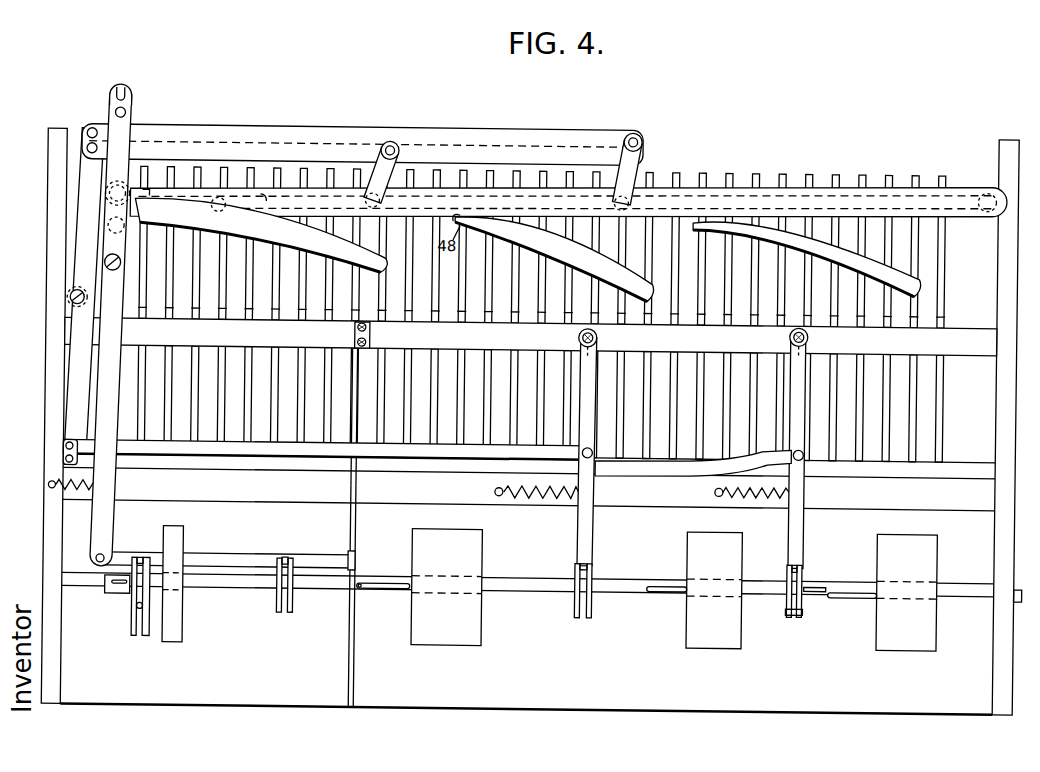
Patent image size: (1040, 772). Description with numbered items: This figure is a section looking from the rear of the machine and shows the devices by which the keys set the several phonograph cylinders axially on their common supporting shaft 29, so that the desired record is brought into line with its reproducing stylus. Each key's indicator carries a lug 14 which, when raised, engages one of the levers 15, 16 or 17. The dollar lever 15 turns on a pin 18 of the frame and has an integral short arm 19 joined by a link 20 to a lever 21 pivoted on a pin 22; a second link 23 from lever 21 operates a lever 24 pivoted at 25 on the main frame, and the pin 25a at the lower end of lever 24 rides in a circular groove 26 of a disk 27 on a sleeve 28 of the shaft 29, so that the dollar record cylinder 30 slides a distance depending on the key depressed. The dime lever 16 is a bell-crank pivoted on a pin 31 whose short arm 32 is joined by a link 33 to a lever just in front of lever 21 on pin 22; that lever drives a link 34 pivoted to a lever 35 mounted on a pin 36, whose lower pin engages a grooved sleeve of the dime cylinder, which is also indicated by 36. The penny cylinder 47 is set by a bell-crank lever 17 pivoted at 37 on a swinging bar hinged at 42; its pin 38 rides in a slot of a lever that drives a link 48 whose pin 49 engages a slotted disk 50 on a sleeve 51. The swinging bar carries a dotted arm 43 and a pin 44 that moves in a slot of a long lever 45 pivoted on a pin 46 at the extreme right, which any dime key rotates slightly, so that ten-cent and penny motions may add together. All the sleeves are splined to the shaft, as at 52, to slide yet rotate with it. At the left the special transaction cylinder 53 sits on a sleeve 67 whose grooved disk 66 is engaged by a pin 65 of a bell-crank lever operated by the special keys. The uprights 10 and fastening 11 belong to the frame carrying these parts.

The upright bar 10 is at (98, 378).
The screw 11 is at (103, 267).
The lug 14 is at (749, 320).
The lever 15 is at (806, 259).
The lever 16 is at (554, 259).
The bell-crank lever 17 is at (300, 238).
The pin 18 is at (604, 189).
The short arm 19 is at (640, 154).
The link 20 is at (349, 129).
The lever 21 is at (79, 133).
The pin 22 is at (69, 302).
The link 23 is at (298, 466).
The lever 24 is at (792, 527).
The pivot 25 is at (809, 334).
The pin 25a is at (804, 569).
The circular groove 26 is at (796, 615).
The disk 27 is at (805, 609).
The sleeve 28 is at (826, 590).
The shaft 29 is at (769, 595).
The record cylinder 30 is at (880, 623).
The pin 31 is at (356, 200).
The short arm 32 is at (396, 152).
The link 33 is at (237, 153).
The link 34 is at (243, 453).
The lever 35 is at (594, 532).
The pin / dime cylinder 36 is at (597, 337).
The pivot 37 is at (103, 198).
The pin 38 is at (117, 100).
The pivot 42 is at (106, 229).
The arm 43 is at (143, 195).
The pin 44 is at (216, 209).
The long lever 45 is at (260, 200).
The pin 46 is at (983, 194).
The cylinder 47 is at (483, 612).
The link 48 is at (212, 562).
The pin 49 is at (286, 563).
The disk 50 is at (294, 607).
The sleeve 51 is at (367, 588).
The spline 52 is at (392, 592).
The cylinder 53 is at (187, 620).
The pin 65 is at (144, 612).
The disk 66 is at (132, 609).
The sleeve 67 is at (120, 601).